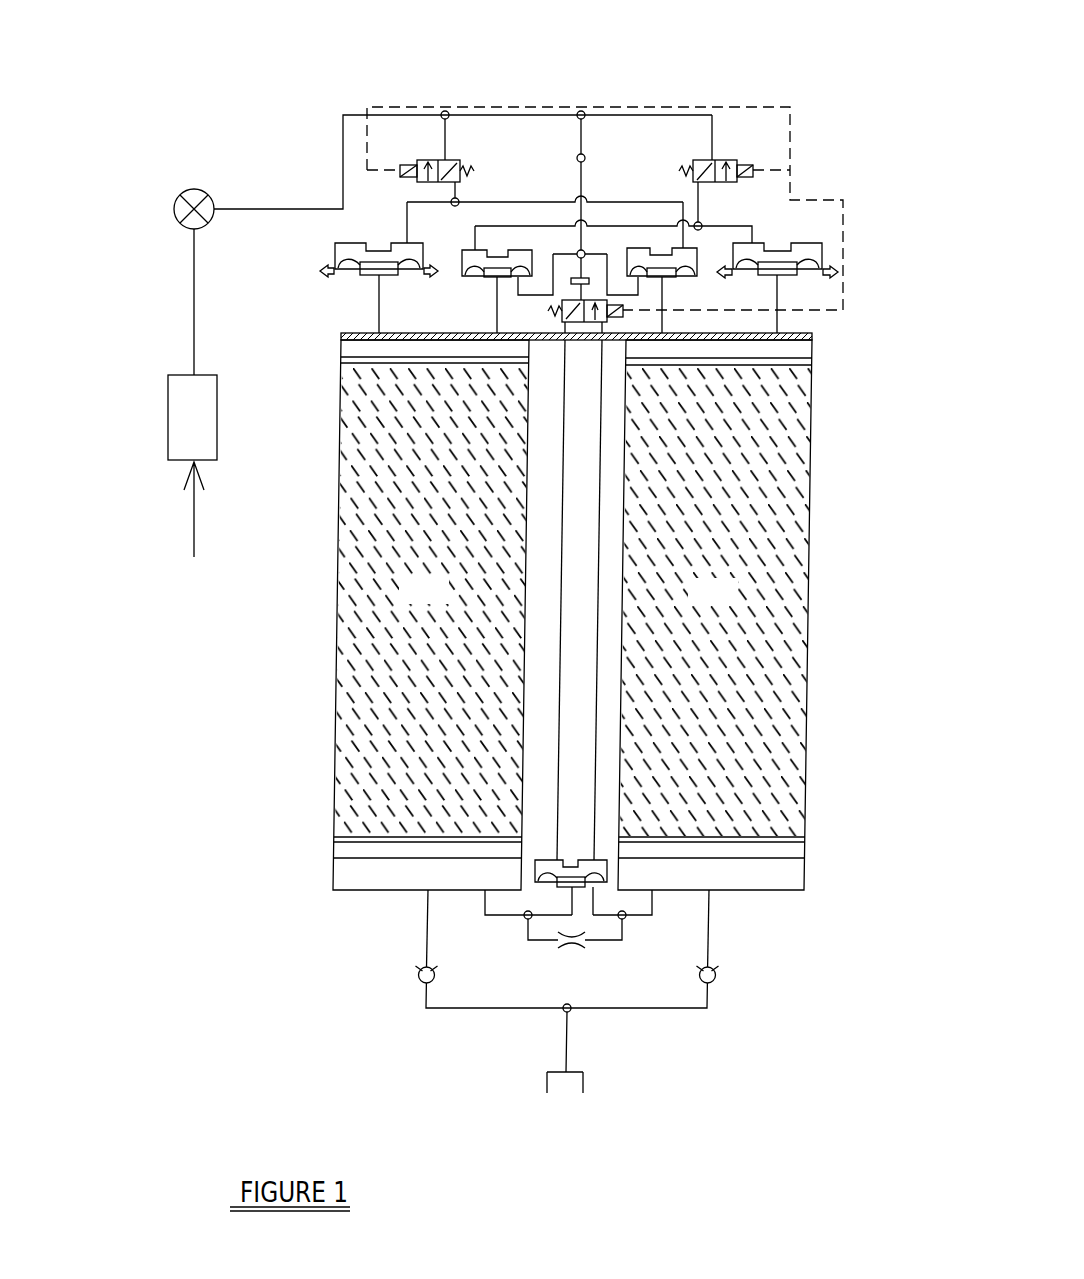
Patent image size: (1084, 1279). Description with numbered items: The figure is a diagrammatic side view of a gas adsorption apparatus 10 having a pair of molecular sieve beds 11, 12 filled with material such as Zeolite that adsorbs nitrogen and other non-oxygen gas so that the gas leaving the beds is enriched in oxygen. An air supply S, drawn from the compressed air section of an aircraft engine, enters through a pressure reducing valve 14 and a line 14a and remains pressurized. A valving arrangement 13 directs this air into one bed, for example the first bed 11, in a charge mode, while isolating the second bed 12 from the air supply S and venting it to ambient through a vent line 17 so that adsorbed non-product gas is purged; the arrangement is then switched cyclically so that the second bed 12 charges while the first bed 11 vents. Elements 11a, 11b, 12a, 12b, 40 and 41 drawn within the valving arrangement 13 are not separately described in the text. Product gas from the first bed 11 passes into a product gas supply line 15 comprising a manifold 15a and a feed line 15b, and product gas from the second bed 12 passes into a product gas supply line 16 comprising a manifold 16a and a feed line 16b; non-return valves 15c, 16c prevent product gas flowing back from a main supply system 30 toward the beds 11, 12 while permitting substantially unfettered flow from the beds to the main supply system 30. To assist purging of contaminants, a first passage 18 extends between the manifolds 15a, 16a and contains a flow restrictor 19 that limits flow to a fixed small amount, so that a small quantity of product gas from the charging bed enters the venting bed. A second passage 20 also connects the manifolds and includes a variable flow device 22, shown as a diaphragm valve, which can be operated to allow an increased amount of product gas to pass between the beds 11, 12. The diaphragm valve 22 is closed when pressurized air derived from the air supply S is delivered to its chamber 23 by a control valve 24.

The gas adsorption apparatus 10 is at (814, 129).
The first molecular sieve bed 11 is at (715, 615).
The inlet valve of second bed 11a is at (640, 247).
The exhaust valve of second bed 11b is at (808, 243).
The second molecular sieve bed 12 is at (431, 615).
The inlet valve of first bed 12a is at (531, 250).
The exhaust valve of first bed 12b is at (350, 243).
The valving arrangement 13 is at (513, 96).
The pressure reducing valve 14 is at (186, 191).
The line 14a is at (259, 208).
The product gas supply line 15 is at (684, 949).
The manifold 15a is at (763, 885).
The feed line 15b is at (713, 933).
The non-return valve 15c is at (720, 987).
The product gas supply line 16 is at (471, 948).
The manifold 16a is at (368, 888).
The feed line 16b is at (421, 947).
The non-return valve 16c is at (422, 985).
The vent line 17 is at (320, 272).
The first passage 18 is at (598, 918).
The flow restrictor 19 is at (570, 948).
The second passage 20 is at (612, 945).
The variable flow device 22 is at (605, 847).
The chamber 23 is at (547, 863).
The control valve 24 is at (594, 325).
The main supply system 30 is at (563, 1060).
The solenoid pilot valve 40 is at (693, 157).
The solenoid pilot valve 41 is at (422, 157).
The air supply S is at (170, 420).